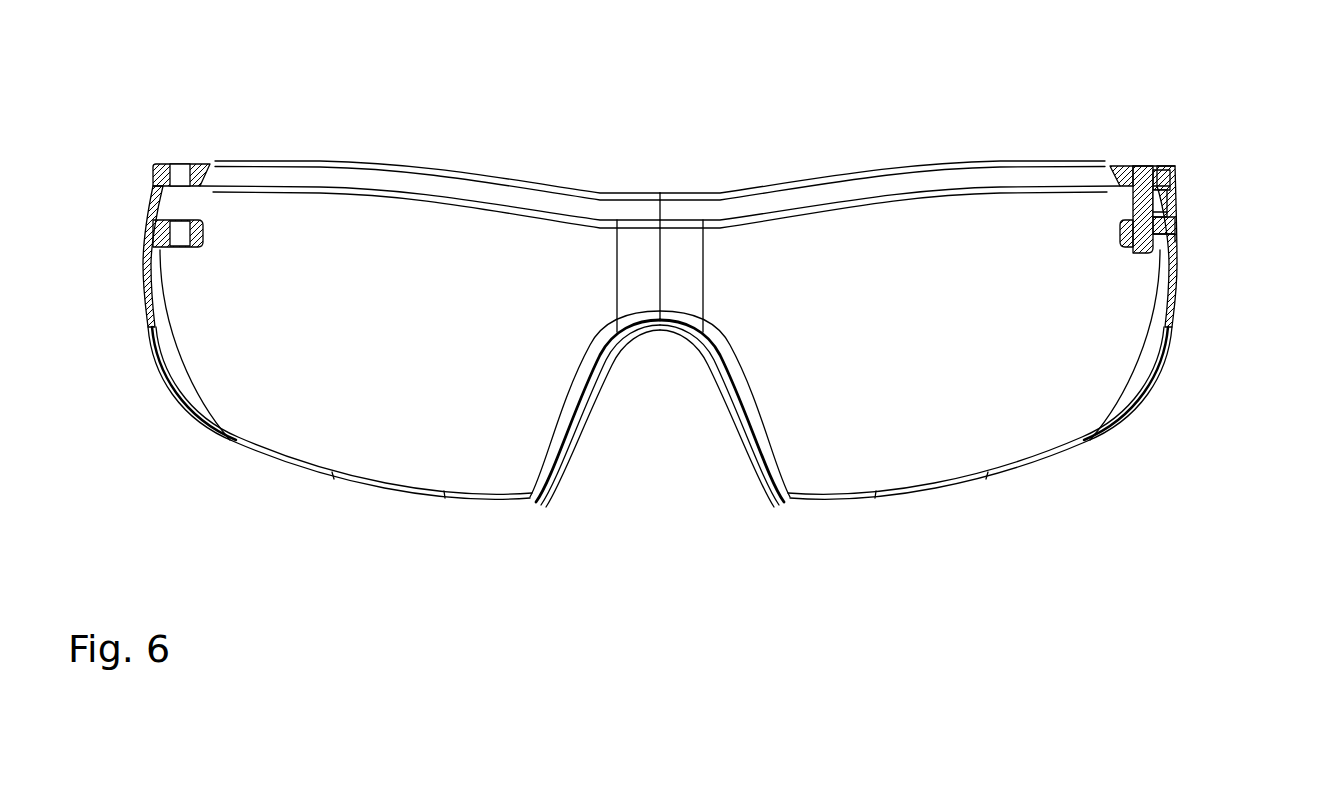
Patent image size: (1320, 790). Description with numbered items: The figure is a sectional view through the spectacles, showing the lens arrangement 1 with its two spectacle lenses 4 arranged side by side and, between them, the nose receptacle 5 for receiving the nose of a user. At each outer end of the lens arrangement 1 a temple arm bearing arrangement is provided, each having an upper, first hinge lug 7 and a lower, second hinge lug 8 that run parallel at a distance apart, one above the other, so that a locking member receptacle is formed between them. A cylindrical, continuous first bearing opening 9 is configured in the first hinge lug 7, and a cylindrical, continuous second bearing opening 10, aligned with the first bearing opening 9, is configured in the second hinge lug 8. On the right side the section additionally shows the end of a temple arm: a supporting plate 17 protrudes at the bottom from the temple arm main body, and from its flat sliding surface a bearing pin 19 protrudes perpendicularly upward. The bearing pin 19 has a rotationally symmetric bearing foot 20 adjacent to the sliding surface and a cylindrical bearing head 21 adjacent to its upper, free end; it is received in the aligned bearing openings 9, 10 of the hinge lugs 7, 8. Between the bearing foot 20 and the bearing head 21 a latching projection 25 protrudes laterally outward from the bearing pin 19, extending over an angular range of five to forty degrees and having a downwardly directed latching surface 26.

The lens arrangement 1 is at (455, 503).
The spectacle lens 4 is at (353, 440).
The nose receptacle 5 is at (660, 435).
The first hinge lug 7 is at (150, 172).
The second hinge lug 8 is at (155, 233).
The first bearing opening 9 is at (178, 175).
The second bearing opening 10 is at (183, 235).
The supporting plate 17 is at (1173, 300).
The bearing pin 19 is at (1173, 186).
The bearing foot 20 is at (1175, 240).
The bearing head 21 is at (1143, 167).
The latching projection 25 is at (1175, 212).
The latching surface 26 is at (1173, 232).